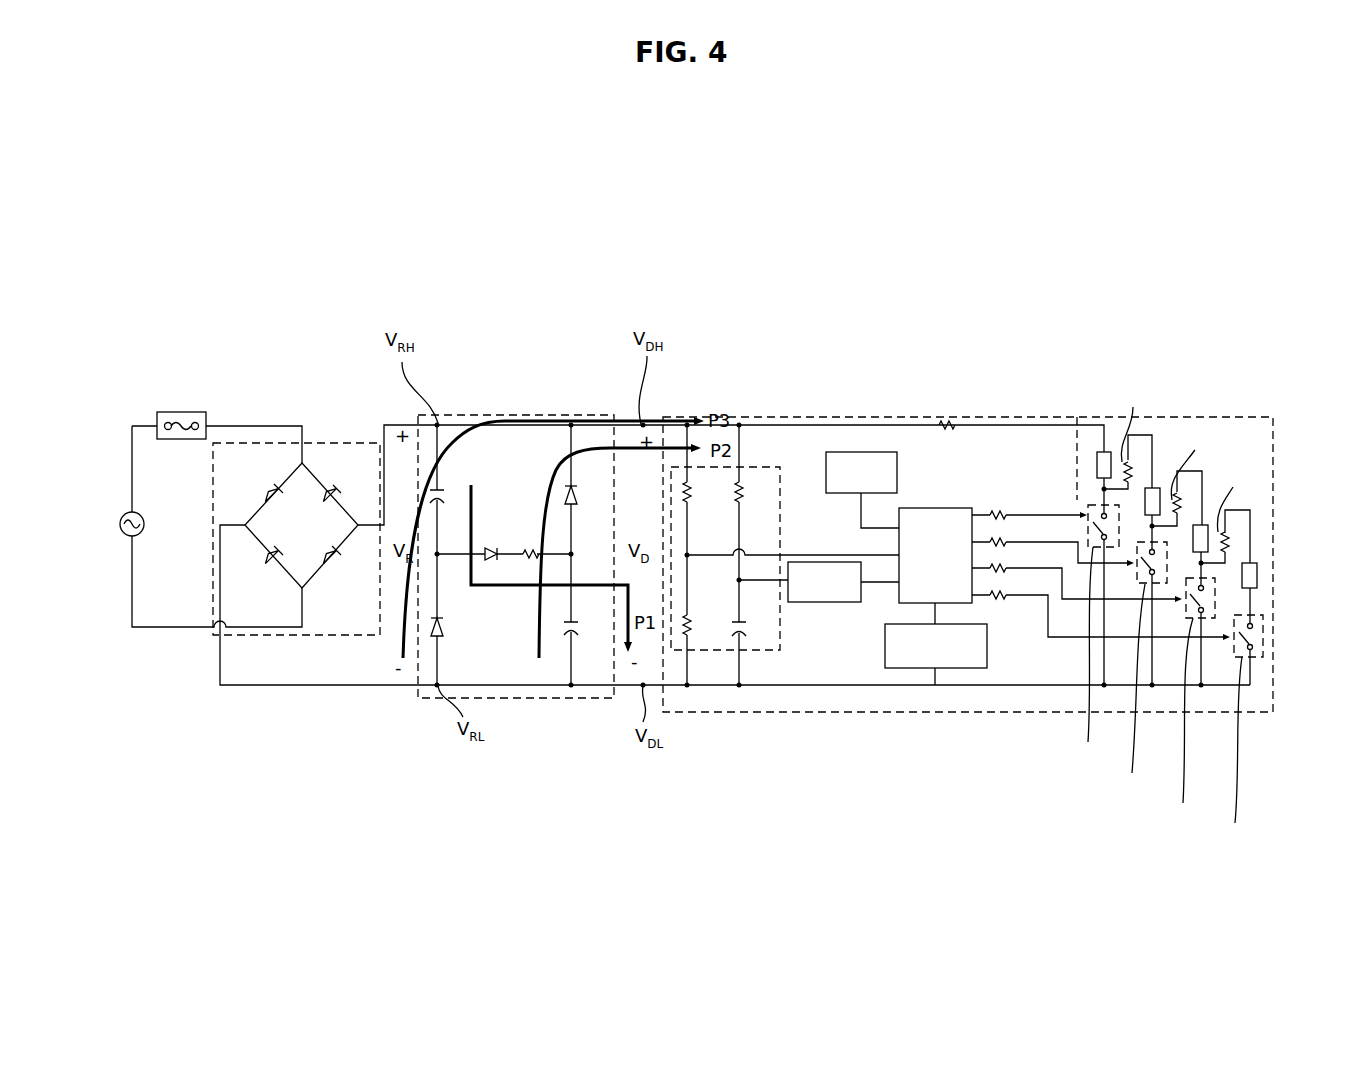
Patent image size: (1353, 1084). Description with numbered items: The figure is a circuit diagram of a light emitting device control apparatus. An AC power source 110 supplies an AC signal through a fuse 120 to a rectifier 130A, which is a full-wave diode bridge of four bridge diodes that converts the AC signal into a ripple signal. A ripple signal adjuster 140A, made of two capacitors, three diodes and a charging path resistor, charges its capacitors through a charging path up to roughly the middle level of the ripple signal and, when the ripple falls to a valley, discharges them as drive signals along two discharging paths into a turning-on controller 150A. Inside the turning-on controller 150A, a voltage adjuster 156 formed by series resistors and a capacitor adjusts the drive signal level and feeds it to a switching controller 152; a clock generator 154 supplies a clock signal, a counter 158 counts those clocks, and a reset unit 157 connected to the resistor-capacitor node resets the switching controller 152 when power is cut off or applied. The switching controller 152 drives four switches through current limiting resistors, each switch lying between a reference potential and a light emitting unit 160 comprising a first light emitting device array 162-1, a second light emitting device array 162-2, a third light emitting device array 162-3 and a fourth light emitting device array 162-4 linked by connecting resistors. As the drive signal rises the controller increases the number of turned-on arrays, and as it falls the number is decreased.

The AC power source 110 is at (125, 517).
The fuse 120 is at (180, 412).
The rectifier 130A is at (338, 443).
The ripple signal adjuster 140A is at (510, 415).
The turning-on controller 150A is at (868, 417).
The switching controller 152 is at (945, 508).
The clock generator 154 is at (988, 646).
The voltage adjuster 156 is at (781, 531).
The reset unit 157 is at (825, 603).
The counter 158 is at (898, 456).
The light emitting unit 160 is at (1198, 580).
The first light emitting device array 162-1 is at (1097, 452).
The second light emitting device array 162-2 is at (1157, 487).
The third light emitting device array 162-3 is at (1203, 524).
The fourth light emitting device array 162-4 is at (1252, 562).